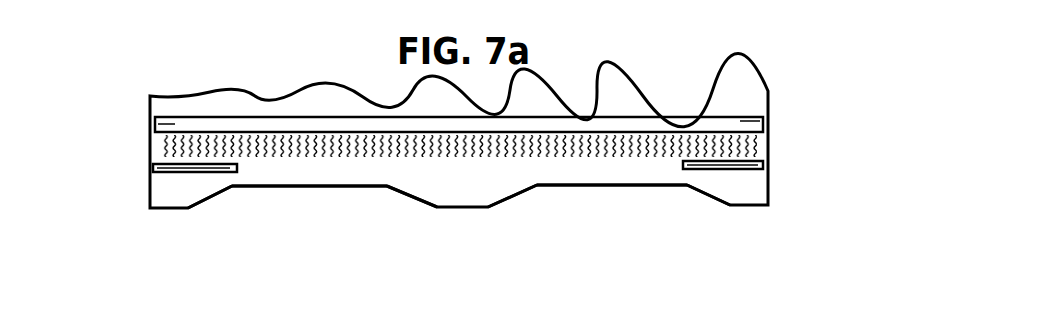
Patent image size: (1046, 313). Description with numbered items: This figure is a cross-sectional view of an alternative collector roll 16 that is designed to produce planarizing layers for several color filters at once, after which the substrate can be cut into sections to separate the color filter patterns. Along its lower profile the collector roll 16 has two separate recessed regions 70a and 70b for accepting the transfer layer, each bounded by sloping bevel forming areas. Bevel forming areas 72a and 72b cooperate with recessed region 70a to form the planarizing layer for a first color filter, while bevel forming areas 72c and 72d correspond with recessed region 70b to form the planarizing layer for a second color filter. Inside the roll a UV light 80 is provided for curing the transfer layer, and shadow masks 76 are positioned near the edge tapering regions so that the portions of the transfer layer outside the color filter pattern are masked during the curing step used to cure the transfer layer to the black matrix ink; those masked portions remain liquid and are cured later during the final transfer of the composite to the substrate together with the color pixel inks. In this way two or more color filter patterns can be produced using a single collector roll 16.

The collector roll 16 is at (150, 152).
The UV light 80 is at (657, 117).
The shadow masks 76 is at (170, 174).
The bevel forming area 72a is at (203, 202).
The recessed region 70a is at (313, 193).
The bevel forming area 72b is at (407, 197).
The bevel forming area 72c is at (517, 195).
The recessed region 70b is at (612, 193).
The bevel forming area 72d is at (707, 197).